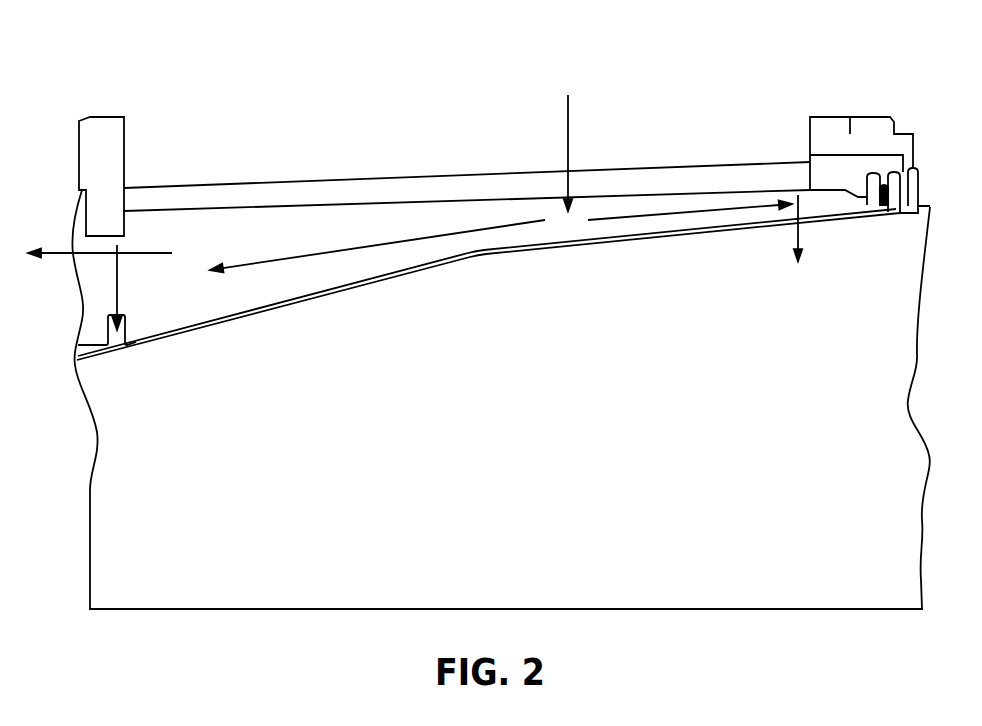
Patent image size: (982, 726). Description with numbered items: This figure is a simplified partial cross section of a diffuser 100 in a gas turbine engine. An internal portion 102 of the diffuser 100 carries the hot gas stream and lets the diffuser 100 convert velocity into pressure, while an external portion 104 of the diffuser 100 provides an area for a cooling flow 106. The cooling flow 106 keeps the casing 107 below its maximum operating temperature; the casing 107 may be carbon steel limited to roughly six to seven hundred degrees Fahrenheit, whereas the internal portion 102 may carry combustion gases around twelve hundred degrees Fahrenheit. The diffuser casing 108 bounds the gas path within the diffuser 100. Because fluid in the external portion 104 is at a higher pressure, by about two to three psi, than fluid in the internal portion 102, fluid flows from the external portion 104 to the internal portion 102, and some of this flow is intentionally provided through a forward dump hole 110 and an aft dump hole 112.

The diffuser 100 is at (201, 426).
The internal portion 102 is at (353, 512).
The external portion 104 is at (219, 250).
The cooling flow 106 is at (362, 245).
The casing 107 is at (462, 190).
The diffuser casing 108 is at (237, 323).
The forward dump hole 110 is at (115, 287).
The aft dump hole 112 is at (800, 237).